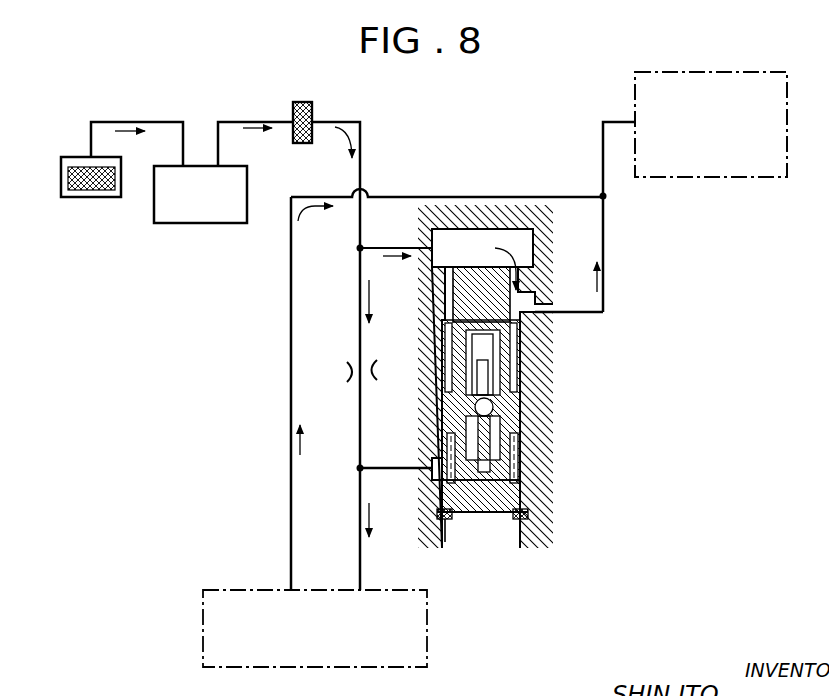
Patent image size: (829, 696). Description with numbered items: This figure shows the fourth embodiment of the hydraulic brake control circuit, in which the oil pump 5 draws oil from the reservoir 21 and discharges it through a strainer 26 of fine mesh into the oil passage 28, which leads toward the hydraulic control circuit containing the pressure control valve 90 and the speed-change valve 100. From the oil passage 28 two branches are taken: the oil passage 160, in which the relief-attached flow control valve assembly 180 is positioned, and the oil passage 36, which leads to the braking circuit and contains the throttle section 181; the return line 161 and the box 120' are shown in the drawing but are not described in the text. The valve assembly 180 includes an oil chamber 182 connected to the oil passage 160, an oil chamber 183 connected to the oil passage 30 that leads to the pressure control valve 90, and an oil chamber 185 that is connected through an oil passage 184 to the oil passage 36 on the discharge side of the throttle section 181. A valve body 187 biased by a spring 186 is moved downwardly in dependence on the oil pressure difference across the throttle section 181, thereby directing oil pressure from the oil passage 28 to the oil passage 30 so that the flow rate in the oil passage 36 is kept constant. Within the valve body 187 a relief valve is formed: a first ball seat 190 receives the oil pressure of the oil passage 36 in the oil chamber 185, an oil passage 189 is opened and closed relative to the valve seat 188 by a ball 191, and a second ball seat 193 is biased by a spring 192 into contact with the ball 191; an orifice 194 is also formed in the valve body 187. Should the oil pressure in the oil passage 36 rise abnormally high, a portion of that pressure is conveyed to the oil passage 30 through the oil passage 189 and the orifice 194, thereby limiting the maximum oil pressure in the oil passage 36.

The reservoir 21 is at (72, 156).
The oil pump 5 is at (172, 165).
The strainer 26 is at (313, 106).
The oil passage 28 is at (362, 138).
The oil passage 30 is at (600, 140).
The pressure control valve 90 is at (722, 66).
The speed-change valve 100 is at (702, 108).
The oil passage 160 is at (412, 250).
The return line 161 is at (290, 361).
The oil passage 36 is at (358, 306).
The relief-attached flow control valve assembly 180 is at (626, 389).
The oil chamber 182 is at (487, 232).
The oil chamber 183 is at (527, 300).
The valve body 187 is at (450, 284).
The throttle section 181 is at (377, 365).
The orifice 194 is at (455, 355).
The spring 192 is at (500, 342).
The second ball seat 193 is at (490, 373).
The ball 191 is at (494, 411).
The first ball seat 190 is at (497, 437).
The oil passage 189 is at (448, 431).
The oil chamber 185 is at (443, 461).
The spring 186 is at (518, 477).
The oil passage 184 is at (424, 477).
The valve seat 188 is at (497, 506).
The oil tank 120' is at (308, 612).